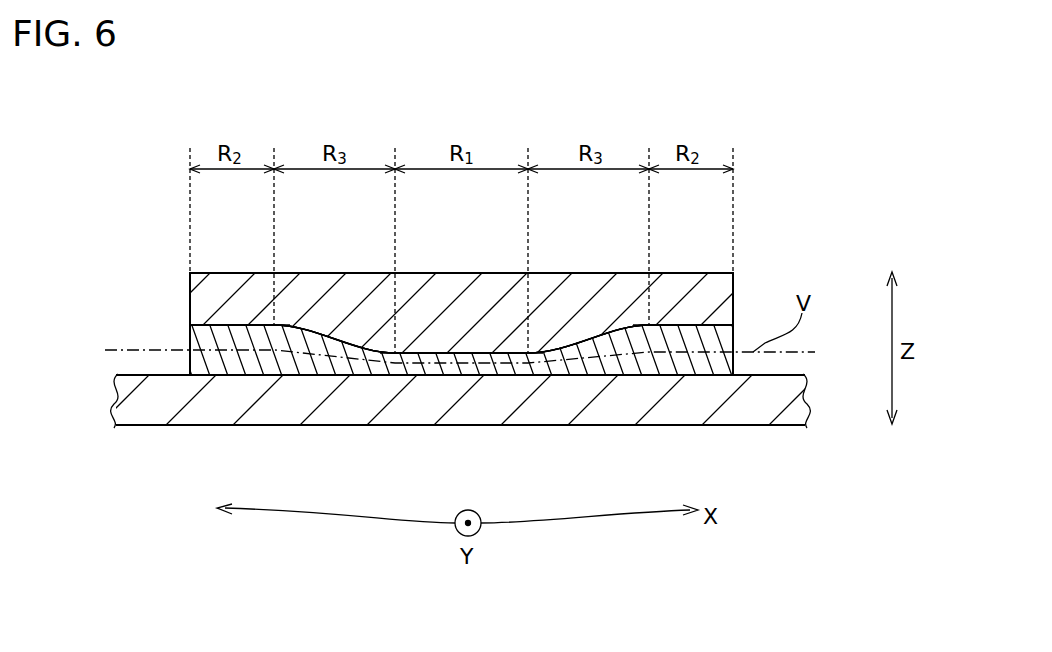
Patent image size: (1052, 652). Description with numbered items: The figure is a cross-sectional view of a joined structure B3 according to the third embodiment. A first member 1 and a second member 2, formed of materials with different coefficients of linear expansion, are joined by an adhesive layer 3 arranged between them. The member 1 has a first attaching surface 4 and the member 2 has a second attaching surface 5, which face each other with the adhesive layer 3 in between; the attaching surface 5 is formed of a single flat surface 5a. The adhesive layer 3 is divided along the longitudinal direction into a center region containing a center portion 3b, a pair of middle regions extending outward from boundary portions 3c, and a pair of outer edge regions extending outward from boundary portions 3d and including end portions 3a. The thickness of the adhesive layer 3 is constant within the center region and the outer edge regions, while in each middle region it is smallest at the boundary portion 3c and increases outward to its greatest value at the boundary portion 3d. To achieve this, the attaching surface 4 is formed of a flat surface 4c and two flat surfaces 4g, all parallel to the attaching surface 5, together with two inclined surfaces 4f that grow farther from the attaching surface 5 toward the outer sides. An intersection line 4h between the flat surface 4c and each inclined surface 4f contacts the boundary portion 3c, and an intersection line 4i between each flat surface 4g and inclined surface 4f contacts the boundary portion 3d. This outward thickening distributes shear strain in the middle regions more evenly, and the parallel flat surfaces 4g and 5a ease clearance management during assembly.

The joined structure B3 is at (171, 181).
The first member 1 is at (207, 277).
The second member 2 is at (160, 428).
The adhesive layer 3 is at (157, 344).
The end portion 3a is at (188, 357).
The center portion 3b is at (447, 368).
The boundary portion 3c is at (383, 378).
The boundary portion 3d is at (265, 360).
The first attaching surface 4 is at (640, 328).
The flat surface 4c is at (470, 365).
The inclined surface 4f is at (318, 343).
The flat surface 4g is at (247, 332).
The intersection line 4h is at (398, 352).
The intersection line 4i is at (278, 327).
The second attaching surface 5 is at (717, 377).
The flat surface 5a is at (685, 378).